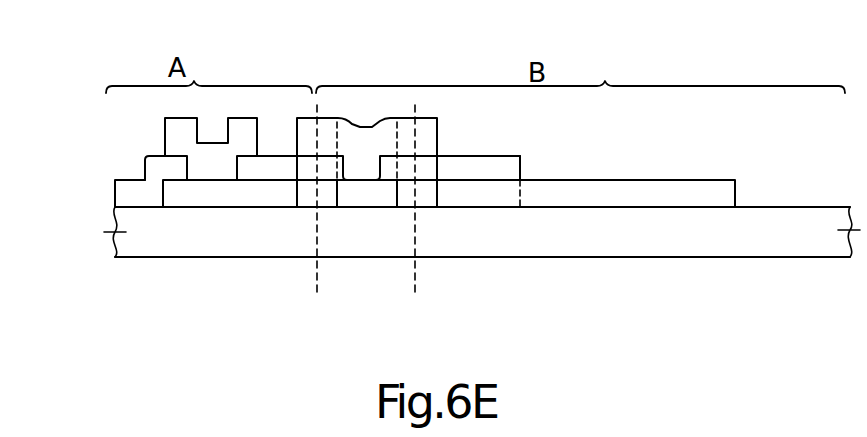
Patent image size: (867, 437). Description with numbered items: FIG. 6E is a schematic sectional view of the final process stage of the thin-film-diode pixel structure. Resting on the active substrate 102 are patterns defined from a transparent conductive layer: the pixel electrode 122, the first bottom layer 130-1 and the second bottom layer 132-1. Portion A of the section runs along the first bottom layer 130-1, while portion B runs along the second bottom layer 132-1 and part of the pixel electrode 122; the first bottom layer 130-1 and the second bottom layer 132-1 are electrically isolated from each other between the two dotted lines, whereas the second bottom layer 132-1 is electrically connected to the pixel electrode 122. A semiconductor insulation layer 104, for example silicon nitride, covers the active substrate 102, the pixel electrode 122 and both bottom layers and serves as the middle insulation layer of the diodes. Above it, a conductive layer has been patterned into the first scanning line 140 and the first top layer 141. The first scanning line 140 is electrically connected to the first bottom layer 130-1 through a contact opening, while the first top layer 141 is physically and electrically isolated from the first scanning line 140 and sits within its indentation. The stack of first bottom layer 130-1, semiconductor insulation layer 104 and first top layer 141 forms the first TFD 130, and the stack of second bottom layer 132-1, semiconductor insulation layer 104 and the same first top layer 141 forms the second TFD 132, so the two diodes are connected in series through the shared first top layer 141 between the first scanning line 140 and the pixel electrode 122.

The active substrate 102 is at (712, 242).
The semiconductor insulation layer 104 is at (127, 198).
The pixel electrode 122 is at (605, 197).
The first TFD 130 is at (310, 194).
The first bottom layer 130-1 is at (193, 193).
The second TFD 132 is at (427, 197).
The second bottom layer 132-1 is at (497, 193).
The first scanning line 140 is at (175, 144).
The first top layer 141 is at (367, 167).